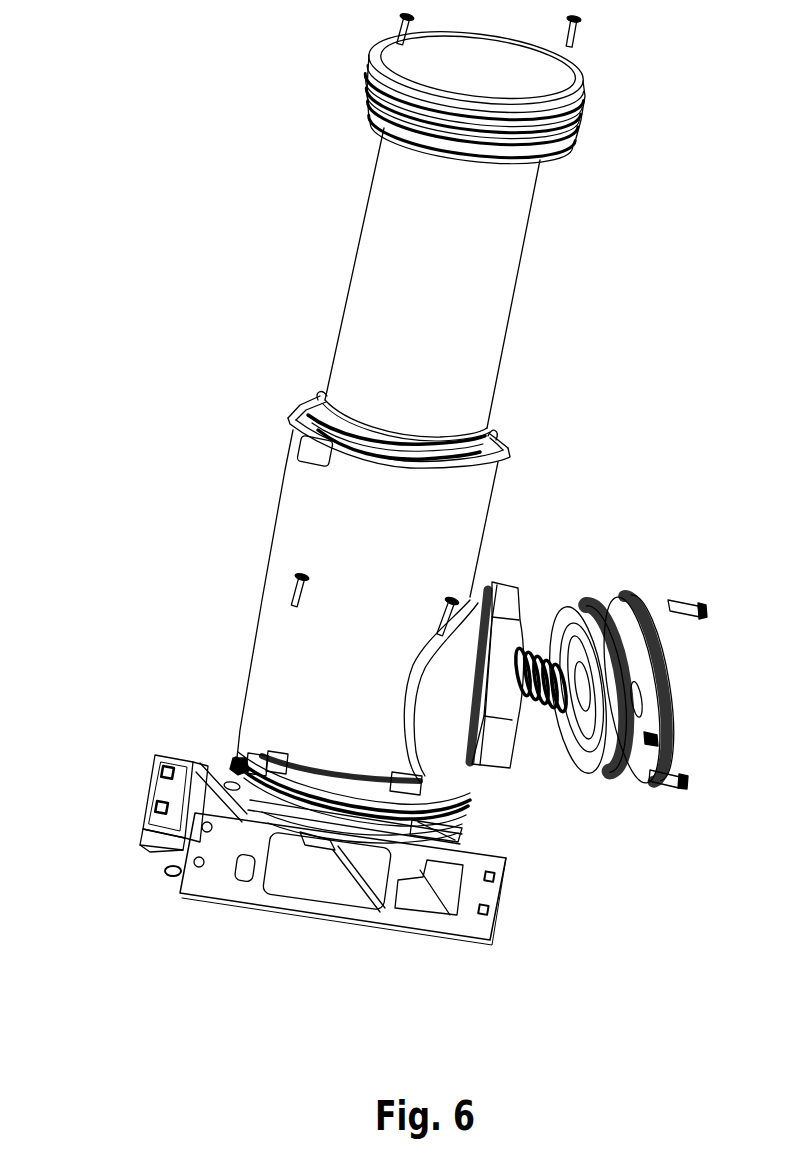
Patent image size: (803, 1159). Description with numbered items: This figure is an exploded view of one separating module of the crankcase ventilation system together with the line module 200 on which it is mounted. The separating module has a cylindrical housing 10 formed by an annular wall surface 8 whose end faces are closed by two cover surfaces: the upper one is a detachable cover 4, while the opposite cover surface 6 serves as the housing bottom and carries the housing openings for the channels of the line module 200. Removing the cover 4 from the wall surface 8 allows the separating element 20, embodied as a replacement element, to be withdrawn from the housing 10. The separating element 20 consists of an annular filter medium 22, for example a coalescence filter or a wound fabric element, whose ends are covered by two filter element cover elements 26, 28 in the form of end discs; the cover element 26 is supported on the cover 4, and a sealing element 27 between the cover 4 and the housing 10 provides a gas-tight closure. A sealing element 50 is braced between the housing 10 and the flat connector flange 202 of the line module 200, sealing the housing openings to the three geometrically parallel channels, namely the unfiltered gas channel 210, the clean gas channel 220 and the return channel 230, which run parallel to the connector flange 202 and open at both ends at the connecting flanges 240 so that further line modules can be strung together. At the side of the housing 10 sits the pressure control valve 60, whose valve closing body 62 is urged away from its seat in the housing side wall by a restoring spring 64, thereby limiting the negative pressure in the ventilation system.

The cover 4 is at (485, 63).
The cover surface 6 is at (233, 738).
The annular wall surface 8 is at (385, 561).
The housing 10 is at (343, 636).
The separating element 20 is at (454, 240).
The annular filter medium 22 is at (438, 273).
The filter element cover element 26 is at (556, 158).
The sealing element 27 is at (583, 124).
The filter element cover element 28 is at (490, 431).
The sealing element 50 is at (231, 758).
The pressure control valve 60 is at (610, 654).
The valve closing body 62 is at (580, 770).
The restoring spring 64 is at (547, 657).
The line module 200 is at (309, 819).
The connector flange 202 is at (227, 760).
The unfiltered gas channel 210 is at (338, 885).
The clean gas channel 220 is at (450, 908).
The return channel 230 is at (245, 880).
The connecting flange 240 is at (484, 897).